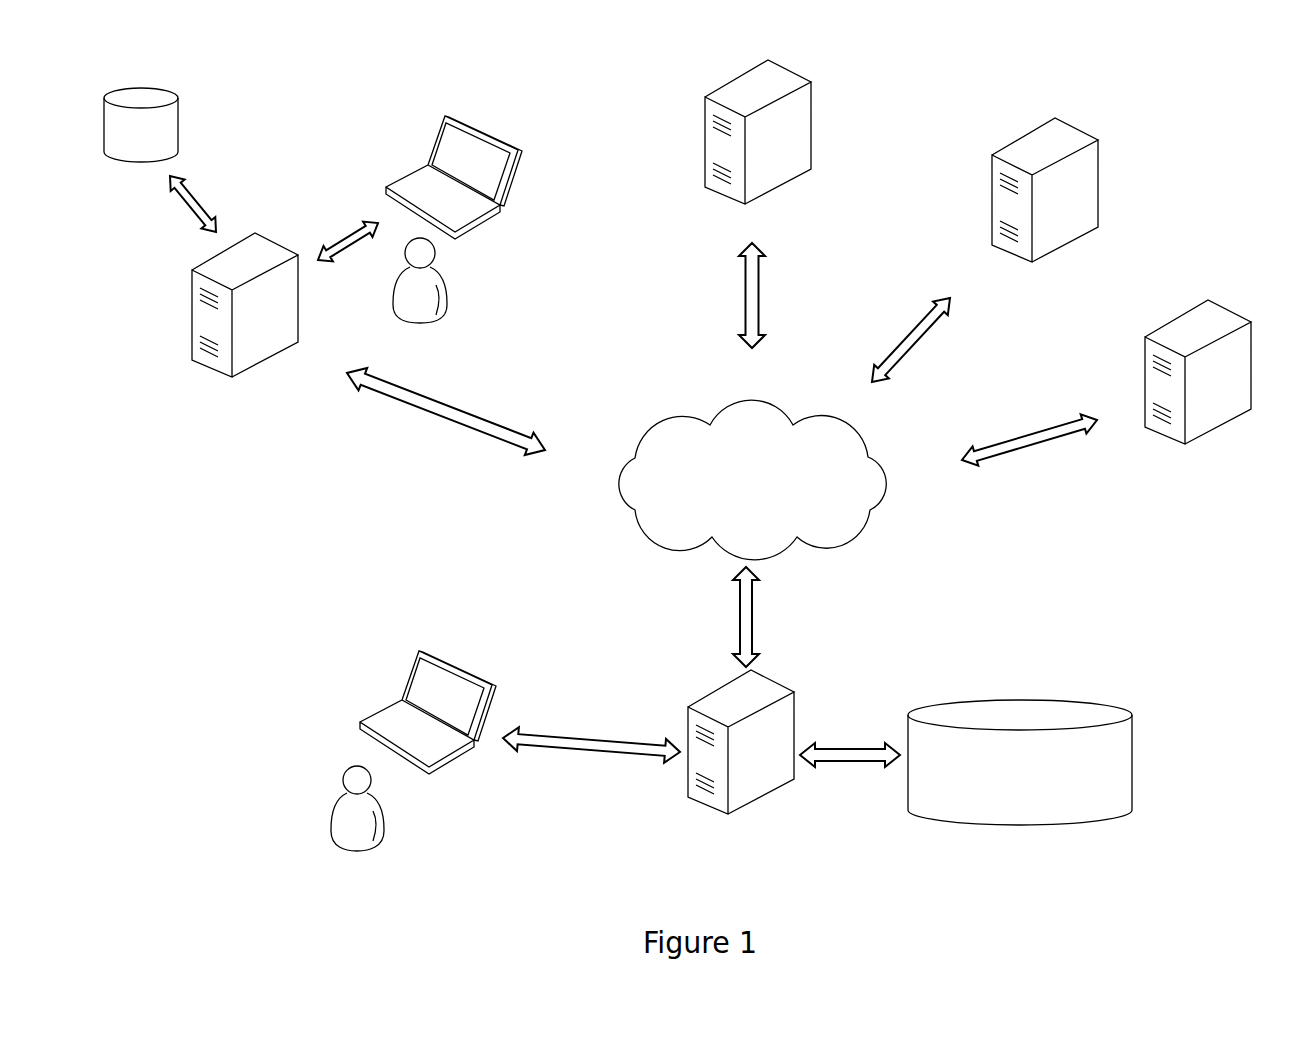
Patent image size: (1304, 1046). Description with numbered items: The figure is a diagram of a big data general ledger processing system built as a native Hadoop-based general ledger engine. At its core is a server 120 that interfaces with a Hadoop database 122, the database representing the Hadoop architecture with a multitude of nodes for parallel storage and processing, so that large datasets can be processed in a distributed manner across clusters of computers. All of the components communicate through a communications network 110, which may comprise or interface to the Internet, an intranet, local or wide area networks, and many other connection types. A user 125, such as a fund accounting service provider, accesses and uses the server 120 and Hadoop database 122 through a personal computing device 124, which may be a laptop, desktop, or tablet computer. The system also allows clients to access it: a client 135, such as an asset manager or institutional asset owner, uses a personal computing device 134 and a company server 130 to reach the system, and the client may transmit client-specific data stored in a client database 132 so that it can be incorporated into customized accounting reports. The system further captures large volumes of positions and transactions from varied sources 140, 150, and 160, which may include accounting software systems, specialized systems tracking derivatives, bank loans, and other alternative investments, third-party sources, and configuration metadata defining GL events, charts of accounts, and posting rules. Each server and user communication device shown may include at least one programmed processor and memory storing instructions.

The communications network 110 is at (752, 480).
The server 120 is at (782, 690).
The Hadoop database 122 is at (990, 712).
The personal computing device 124 is at (415, 675).
The user 125 is at (347, 822).
The company server 130 is at (202, 320).
The client database 132 is at (178, 102).
The personal computing device 134 is at (468, 143).
The client 135 is at (425, 300).
The source 140 is at (768, 83).
The source 150 is at (1053, 141).
The source 160 is at (1210, 318).